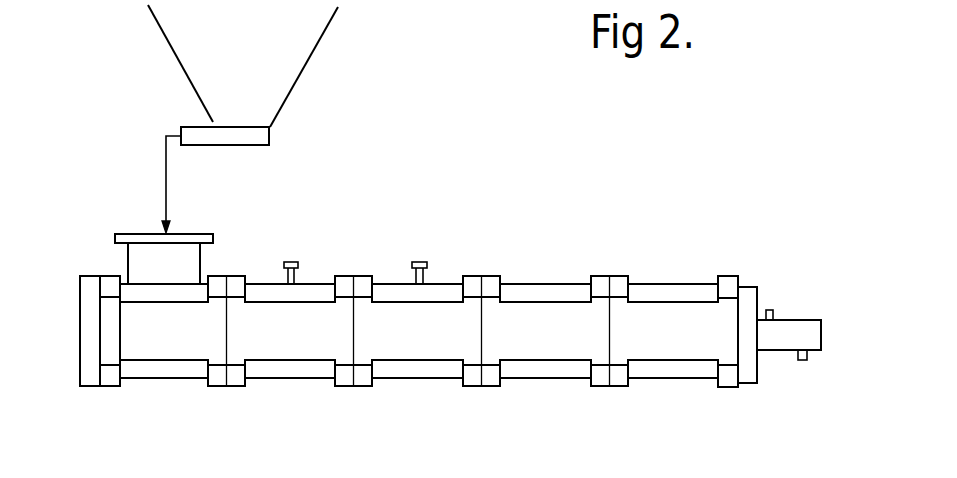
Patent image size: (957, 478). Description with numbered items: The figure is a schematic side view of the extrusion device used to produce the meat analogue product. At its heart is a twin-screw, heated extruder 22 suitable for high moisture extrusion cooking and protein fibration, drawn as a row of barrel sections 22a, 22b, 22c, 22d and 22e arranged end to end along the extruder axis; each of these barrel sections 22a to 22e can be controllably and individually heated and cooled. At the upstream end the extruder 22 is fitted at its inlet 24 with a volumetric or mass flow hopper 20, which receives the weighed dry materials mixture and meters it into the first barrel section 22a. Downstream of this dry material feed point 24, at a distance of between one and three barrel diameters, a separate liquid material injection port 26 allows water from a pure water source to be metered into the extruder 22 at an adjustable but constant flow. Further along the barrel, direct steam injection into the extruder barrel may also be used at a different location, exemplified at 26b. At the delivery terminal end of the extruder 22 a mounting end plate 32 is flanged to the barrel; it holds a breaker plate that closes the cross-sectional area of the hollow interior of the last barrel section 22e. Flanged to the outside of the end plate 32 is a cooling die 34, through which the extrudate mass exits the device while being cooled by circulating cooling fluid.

The hopper 20 is at (165, 37).
The extruder 22 is at (534, 185).
The first barrel section 22a is at (175, 380).
The barrel section 22b is at (300, 380).
The barrel section 22c is at (425, 380).
The barrel section 22d is at (550, 380).
The last barrel section 22e is at (670, 380).
The inlet 24 is at (115, 235).
The liquid material injection port 26 is at (290, 258).
The direct steam injection location 26b is at (420, 262).
The mounting end plate 32 is at (745, 370).
The cooling die 34 is at (797, 320).